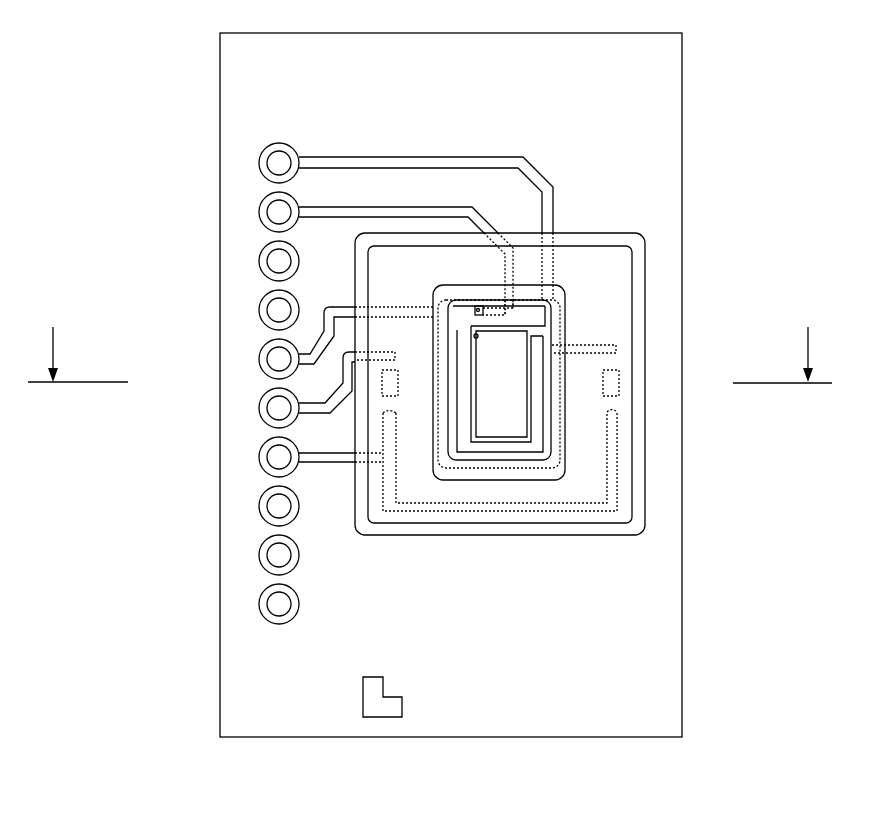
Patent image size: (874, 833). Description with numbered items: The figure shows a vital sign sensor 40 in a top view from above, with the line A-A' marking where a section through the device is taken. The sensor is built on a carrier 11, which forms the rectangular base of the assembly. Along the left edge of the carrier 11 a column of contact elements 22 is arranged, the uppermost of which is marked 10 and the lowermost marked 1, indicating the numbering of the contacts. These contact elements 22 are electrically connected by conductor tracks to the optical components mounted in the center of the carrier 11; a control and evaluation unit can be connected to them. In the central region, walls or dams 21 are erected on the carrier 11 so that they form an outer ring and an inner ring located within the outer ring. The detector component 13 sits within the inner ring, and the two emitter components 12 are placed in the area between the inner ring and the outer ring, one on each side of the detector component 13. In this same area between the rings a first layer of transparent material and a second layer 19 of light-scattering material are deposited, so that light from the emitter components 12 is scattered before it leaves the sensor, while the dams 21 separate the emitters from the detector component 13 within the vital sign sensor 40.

The vital sign sensor 40 is at (133, 73).
The carrier 11 is at (240, 432).
The pad 10 is at (390, 188).
The pad 1 is at (263, 604).
The contact elements 22 is at (258, 212).
The second layer 19 is at (412, 484).
The walls or dams 21 is at (542, 297).
The emitter components 12 is at (387, 387).
The detector component 13 is at (515, 405).